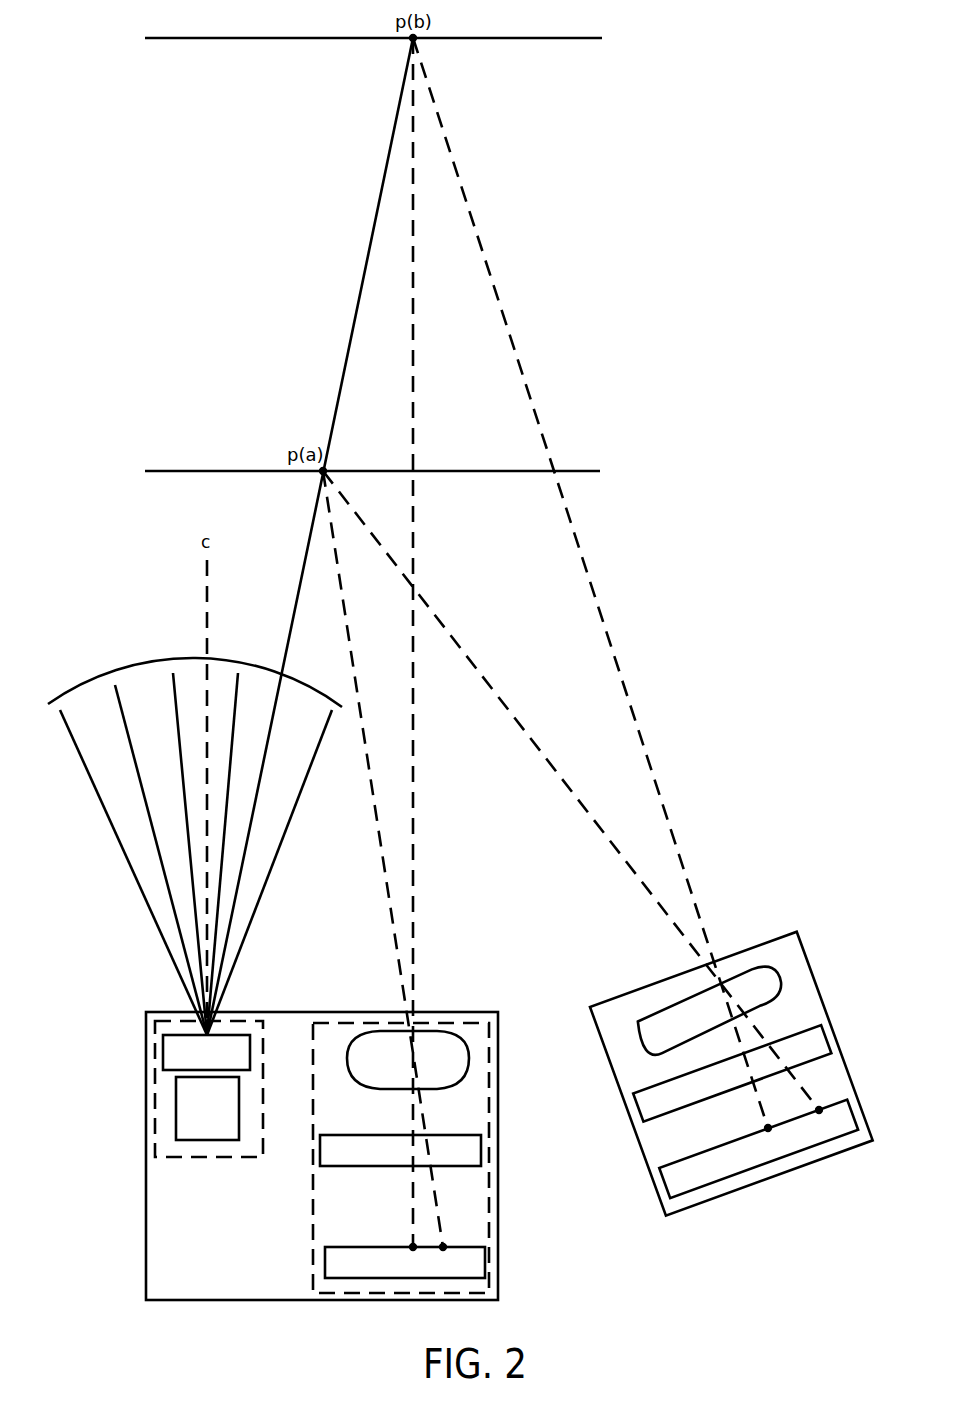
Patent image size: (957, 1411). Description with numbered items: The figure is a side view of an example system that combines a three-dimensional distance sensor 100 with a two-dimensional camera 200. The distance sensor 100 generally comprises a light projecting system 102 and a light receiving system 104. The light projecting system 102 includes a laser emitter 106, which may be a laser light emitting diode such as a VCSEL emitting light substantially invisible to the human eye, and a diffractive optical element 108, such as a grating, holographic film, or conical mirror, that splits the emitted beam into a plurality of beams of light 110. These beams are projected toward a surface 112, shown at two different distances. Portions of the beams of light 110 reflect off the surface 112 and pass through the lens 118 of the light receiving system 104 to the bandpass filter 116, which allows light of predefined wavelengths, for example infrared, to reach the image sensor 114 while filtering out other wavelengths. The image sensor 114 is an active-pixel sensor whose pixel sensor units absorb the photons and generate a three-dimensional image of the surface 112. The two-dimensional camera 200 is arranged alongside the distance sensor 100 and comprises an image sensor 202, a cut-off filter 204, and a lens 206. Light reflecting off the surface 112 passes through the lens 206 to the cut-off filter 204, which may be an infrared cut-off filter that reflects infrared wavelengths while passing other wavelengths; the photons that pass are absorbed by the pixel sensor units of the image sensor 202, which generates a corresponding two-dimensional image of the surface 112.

The distance sensor 100 is at (146, 1212).
The light projecting system 102 is at (155, 1072).
The light receiving system 104 is at (492, 1104).
The laser emitter 106 is at (207, 1108).
The diffractive optical element 108 is at (206, 1052).
The plurality of beams of light 110 is at (110, 690).
The surface 112 is at (152, 38).
The image sensor 114 is at (405, 1262).
The bandpass filter 116 is at (400, 1150).
The lens 118 is at (408, 1060).
The two-dimensional camera 200 is at (828, 1010).
The image sensor 202 is at (758, 1149).
The cut-off filter 204 is at (732, 1073).
The lens 206 is at (710, 1009).